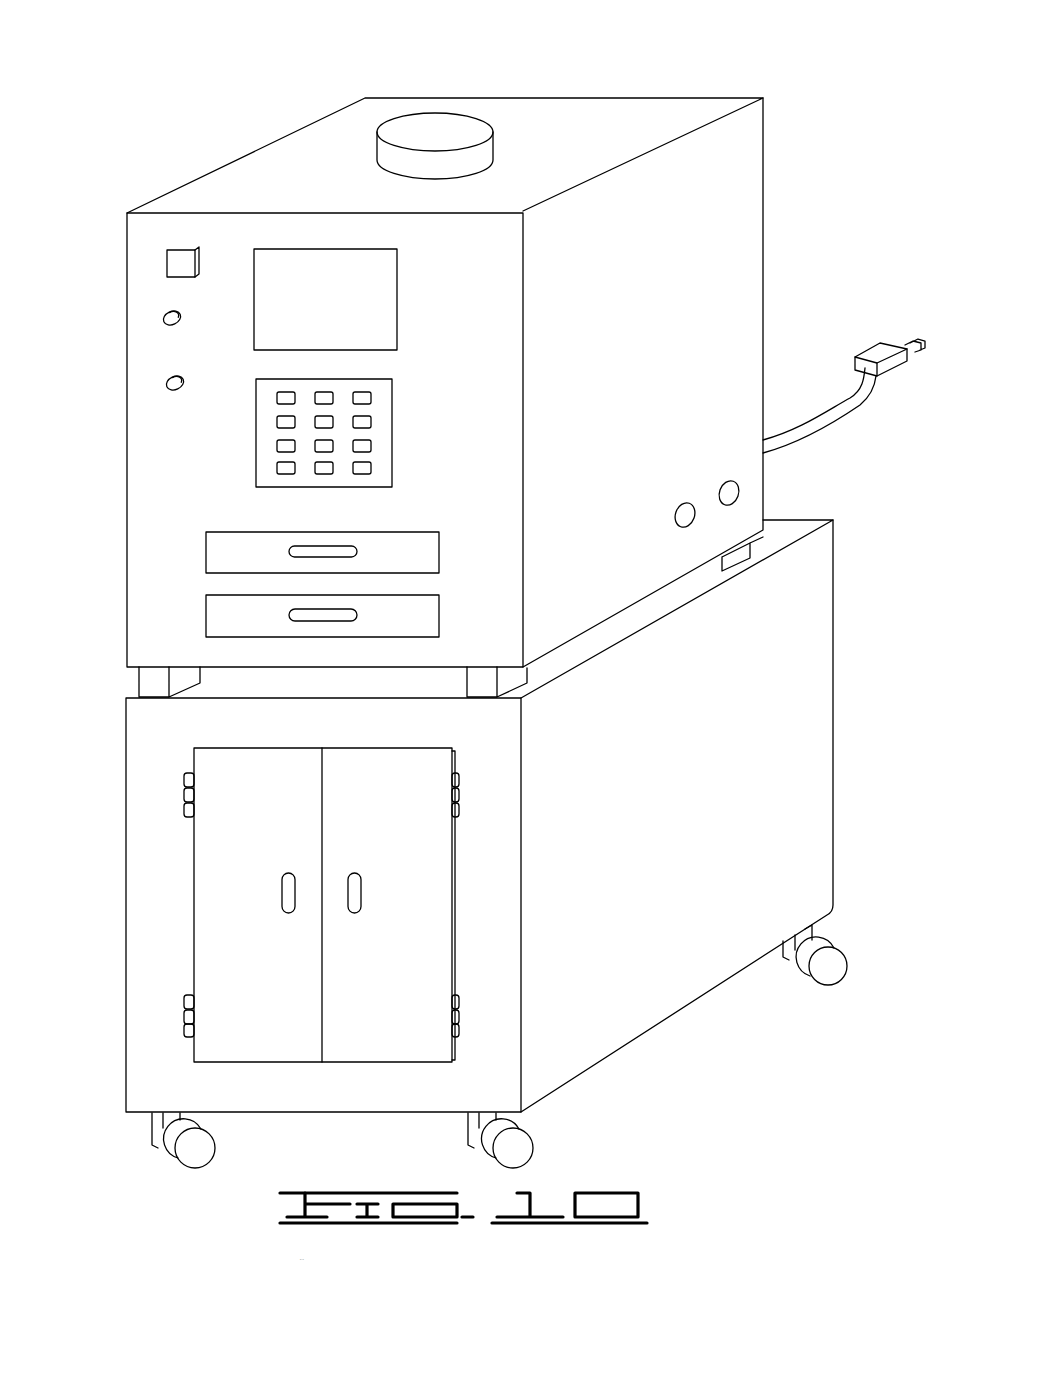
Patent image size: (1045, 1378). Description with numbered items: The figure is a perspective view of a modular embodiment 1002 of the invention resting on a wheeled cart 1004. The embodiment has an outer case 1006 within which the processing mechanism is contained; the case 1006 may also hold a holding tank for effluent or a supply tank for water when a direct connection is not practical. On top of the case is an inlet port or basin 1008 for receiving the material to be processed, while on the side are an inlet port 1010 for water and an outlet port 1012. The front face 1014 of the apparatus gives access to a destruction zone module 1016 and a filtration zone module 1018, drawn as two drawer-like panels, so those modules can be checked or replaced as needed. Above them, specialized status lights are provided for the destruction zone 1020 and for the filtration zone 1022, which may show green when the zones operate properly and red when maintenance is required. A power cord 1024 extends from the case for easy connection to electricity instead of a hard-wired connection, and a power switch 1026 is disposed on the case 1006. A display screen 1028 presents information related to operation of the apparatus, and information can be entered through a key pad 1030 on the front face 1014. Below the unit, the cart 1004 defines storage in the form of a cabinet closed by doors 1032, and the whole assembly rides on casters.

The modular embodiment 1002 is at (670, 324).
The wheeled cart 1004 is at (708, 820).
The outer case 1006 is at (723, 72).
The inlet port or basin 1008 is at (427, 124).
The inlet port 1010 is at (679, 504).
The outlet port 1012 is at (739, 489).
The front face 1014 is at (480, 389).
The destruction zone module 1016 is at (206, 550).
The filtration zone module 1018 is at (206, 624).
The destruction zone status light 1020 is at (165, 316).
The filtration zone status light 1022 is at (168, 381).
The power cord 1024 is at (815, 408).
The power switch 1026 is at (167, 268).
The display screen 1028 is at (346, 316).
The key pad 1030 is at (256, 463).
The doors 1032 is at (193, 956).